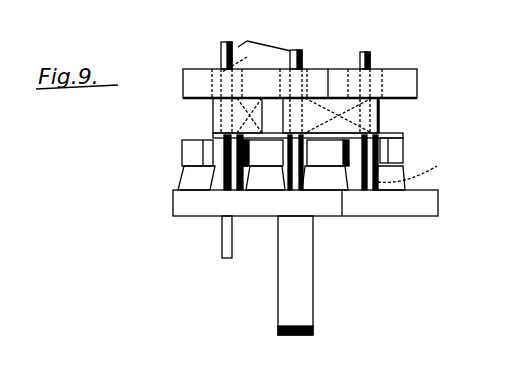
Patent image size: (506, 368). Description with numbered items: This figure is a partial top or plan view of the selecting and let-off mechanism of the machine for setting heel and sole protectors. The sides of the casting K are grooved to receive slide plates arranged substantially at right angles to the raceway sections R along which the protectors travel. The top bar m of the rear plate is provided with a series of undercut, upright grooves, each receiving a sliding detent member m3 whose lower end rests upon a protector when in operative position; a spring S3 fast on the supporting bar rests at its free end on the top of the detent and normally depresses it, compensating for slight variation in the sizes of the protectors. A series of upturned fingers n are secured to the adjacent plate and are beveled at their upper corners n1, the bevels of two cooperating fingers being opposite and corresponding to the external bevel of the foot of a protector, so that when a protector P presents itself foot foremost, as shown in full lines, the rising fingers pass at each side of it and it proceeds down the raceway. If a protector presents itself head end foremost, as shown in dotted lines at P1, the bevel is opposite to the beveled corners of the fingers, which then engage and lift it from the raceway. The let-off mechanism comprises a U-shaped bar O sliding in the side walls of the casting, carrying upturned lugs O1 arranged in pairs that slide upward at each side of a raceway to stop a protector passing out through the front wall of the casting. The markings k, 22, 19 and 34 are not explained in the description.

The casting K is at (408, 72).
The raceway sections R is at (233, 44).
The catches k is at (330, 113).
The reference 22 is at (286, 81).
The reference 19 is at (356, 41).
The reference 34 is at (344, 101).
The U-shaped bar O is at (182, 140).
The upturned lugs O1 is at (213, 134).
The upturned fingers n is at (183, 160).
The beveled upper corners n1 is at (438, 142).
The top bar m is at (200, 192).
The sliding detent member m3 is at (390, 220).
The spring S3 is at (307, 309).
The protector P is at (318, 213).
The improperly positioned protector P1 is at (470, 148).